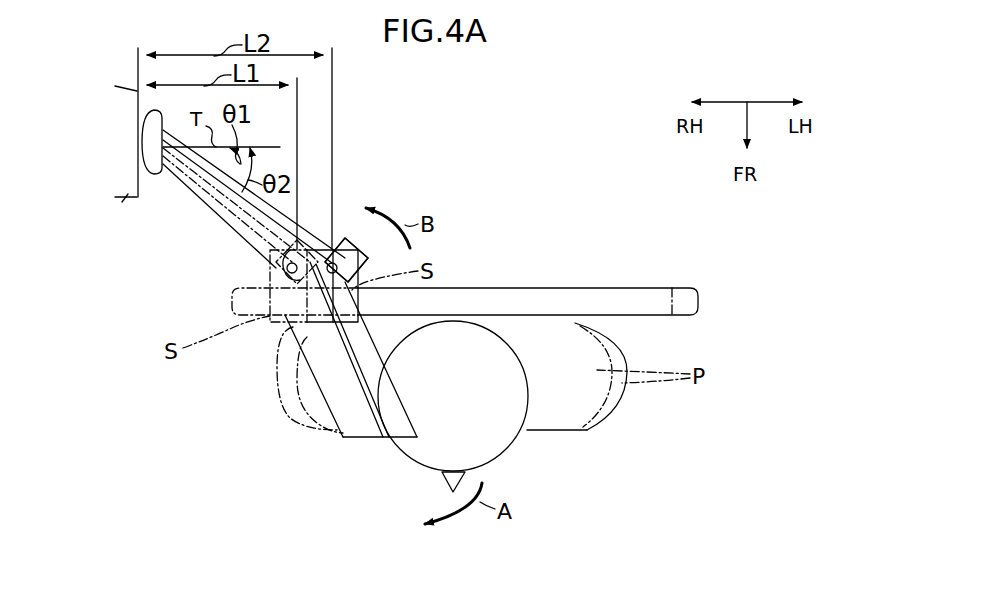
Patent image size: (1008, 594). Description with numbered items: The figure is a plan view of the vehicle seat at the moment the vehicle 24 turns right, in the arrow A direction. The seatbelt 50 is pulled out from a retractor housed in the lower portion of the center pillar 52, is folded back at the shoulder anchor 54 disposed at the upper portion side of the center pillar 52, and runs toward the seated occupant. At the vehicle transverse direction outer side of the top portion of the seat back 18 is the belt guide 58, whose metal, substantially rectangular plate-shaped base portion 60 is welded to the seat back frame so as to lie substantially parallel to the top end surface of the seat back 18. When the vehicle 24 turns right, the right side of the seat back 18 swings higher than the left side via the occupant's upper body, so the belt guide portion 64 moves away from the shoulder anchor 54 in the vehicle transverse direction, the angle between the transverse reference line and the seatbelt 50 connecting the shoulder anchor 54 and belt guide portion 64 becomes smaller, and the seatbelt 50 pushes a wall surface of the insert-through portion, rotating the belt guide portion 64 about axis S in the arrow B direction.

The seat back 18 is at (684, 297).
The vehicle 24 is at (238, 484).
The seatbelt 50 is at (248, 242).
The center pillar 52 is at (125, 200).
The shoulder anchor 54 is at (156, 174).
The belt guide 58 is at (370, 211).
The base portion 60 is at (267, 322).
The belt guide portion 64 is at (332, 244).